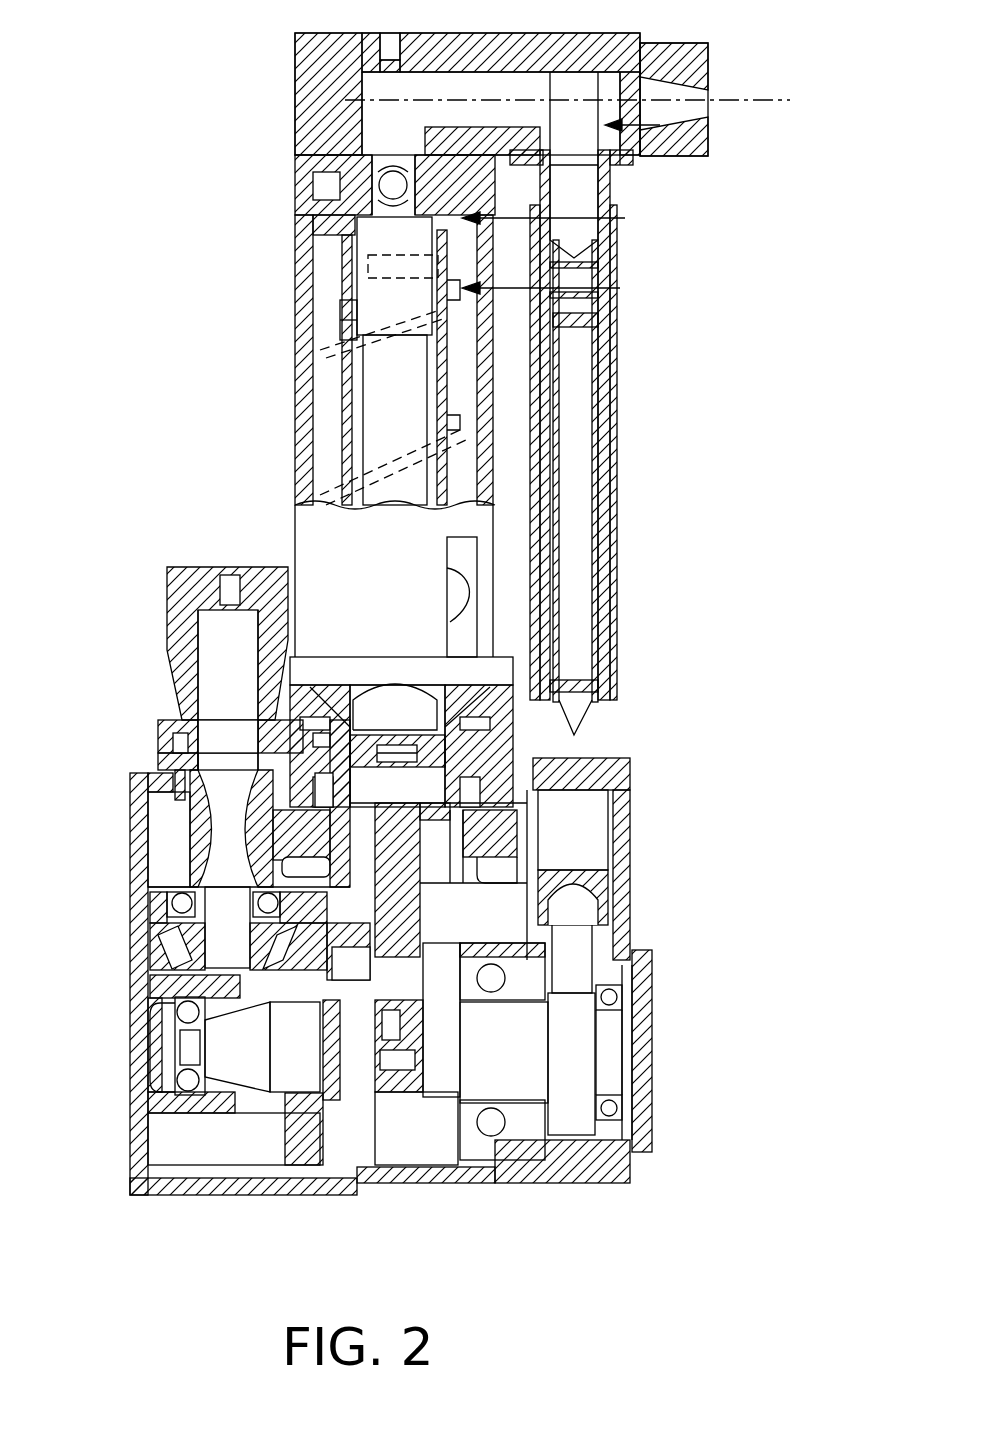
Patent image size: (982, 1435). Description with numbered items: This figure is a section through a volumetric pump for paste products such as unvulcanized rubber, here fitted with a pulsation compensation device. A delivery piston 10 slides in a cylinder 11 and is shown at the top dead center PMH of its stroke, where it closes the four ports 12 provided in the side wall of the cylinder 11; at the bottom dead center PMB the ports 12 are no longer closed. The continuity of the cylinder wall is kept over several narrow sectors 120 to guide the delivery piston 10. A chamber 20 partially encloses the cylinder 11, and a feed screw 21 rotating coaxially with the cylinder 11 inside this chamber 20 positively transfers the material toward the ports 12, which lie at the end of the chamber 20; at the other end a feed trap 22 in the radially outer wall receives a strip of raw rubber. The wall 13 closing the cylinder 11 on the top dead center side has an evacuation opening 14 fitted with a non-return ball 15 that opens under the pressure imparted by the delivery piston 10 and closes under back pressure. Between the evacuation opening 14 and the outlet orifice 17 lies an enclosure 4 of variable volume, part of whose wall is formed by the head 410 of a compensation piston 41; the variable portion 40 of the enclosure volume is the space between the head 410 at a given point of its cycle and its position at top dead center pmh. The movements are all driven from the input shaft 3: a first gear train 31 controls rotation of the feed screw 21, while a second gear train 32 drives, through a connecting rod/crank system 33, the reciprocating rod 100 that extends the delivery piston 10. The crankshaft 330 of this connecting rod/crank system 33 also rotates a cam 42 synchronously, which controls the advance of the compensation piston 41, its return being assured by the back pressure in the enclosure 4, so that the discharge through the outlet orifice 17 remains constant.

The enclosure 4 is at (520, 103).
The head of the compensation piston 410 is at (567, 163).
The outlet orifice 17 is at (712, 100).
The top dead center pmh is at (660, 125).
The ball 15 is at (418, 160).
The evacuation opening 14 is at (386, 168).
The narrow sectors 120 is at (437, 160).
The variable portion of the volume of the enclosure 40 is at (577, 148).
The wall 13 is at (345, 212).
The delivery piston 10 is at (372, 248).
The ports 12 is at (340, 263).
The compensation piston 41 is at (622, 195).
The top dead center PMH is at (574, 229).
The cylinder 11 is at (340, 314).
The bottom dead center PMB is at (571, 298).
The feed screw 21 is at (345, 372).
The chamber 20 is at (330, 460).
The rod 100 is at (400, 383).
The feed trap 22 is at (463, 565).
The input shaft 3 is at (228, 660).
The first gear train 31 is at (118, 845).
The second gear train 32 is at (118, 968).
The cam 42 is at (583, 1070).
The connecting rod/crank system 33 is at (418, 1135).
The crankshaft 330 is at (492, 1073).